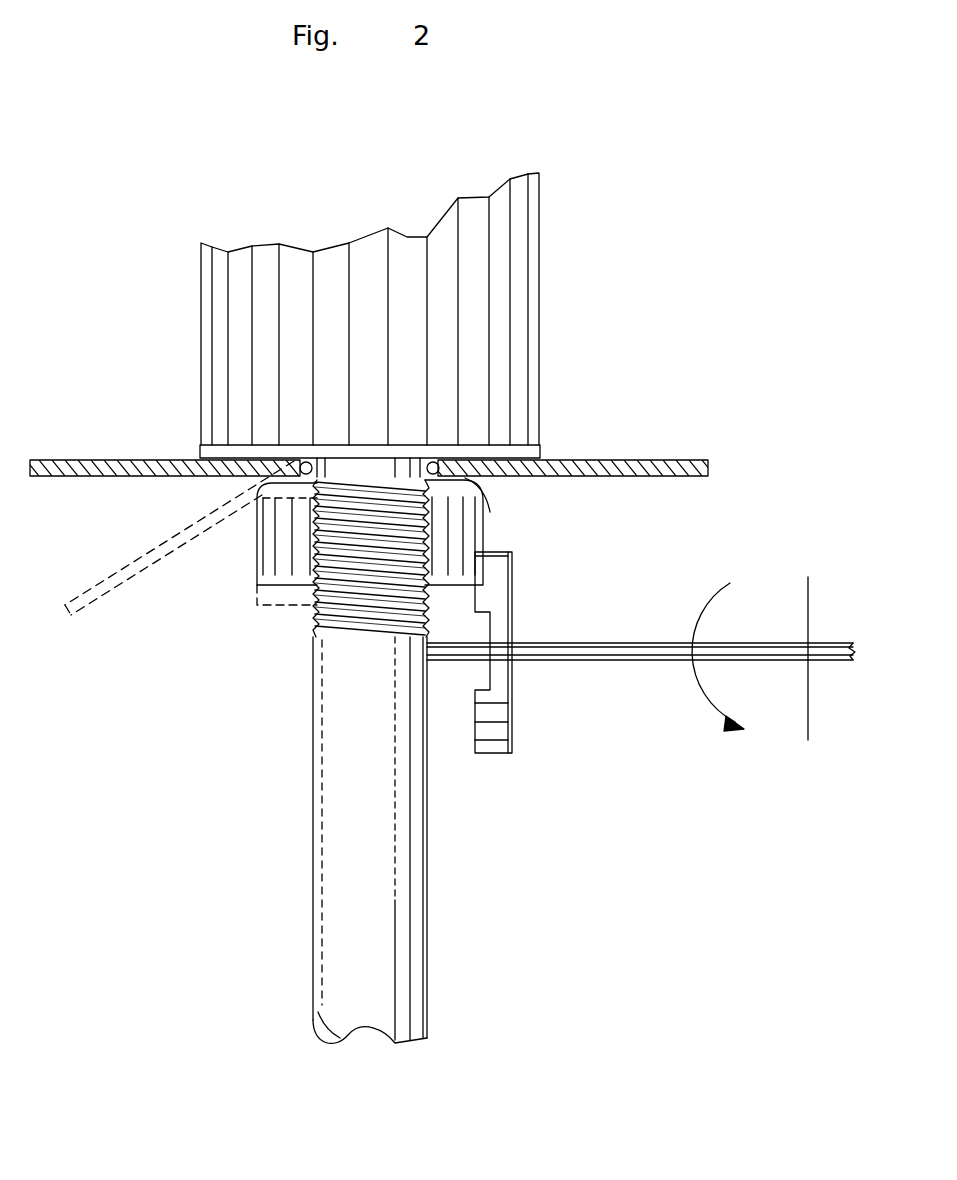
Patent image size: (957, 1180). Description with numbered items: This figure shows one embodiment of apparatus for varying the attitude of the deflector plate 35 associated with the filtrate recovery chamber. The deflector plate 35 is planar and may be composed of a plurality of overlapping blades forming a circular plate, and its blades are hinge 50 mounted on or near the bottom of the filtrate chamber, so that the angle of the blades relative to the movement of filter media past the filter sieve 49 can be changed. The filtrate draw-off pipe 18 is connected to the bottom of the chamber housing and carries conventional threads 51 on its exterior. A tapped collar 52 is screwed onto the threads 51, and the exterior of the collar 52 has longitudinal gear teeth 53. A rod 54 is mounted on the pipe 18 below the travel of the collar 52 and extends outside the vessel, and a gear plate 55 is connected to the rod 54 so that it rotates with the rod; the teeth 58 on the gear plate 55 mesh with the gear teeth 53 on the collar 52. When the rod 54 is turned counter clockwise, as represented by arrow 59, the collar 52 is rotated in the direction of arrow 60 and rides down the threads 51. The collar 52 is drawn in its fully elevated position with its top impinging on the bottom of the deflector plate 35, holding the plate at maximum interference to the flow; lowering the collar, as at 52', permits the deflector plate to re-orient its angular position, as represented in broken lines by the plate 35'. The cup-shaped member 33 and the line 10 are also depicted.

The housing / frame wall 10 is at (808, 728).
The filtrate draw-off pipe 18 is at (348, 900).
The cup-shaped member 33 is at (200, 293).
The deflector plate 35 is at (369, 405).
The deflector plate in re-oriented position 35' is at (179, 538).
The filter sieve 49 is at (243, 355).
The hinge 50 is at (300, 470).
The threads 51 is at (358, 605).
The collar 52 is at (254, 549).
The collar in lowered position 52' is at (254, 628).
The gear teeth 53 is at (450, 550).
The rod 54 is at (750, 642).
The gear plate 55 is at (512, 610).
The teeth 58 is at (475, 723).
The arrow 59 is at (712, 715).
The arrow 60 is at (490, 513).